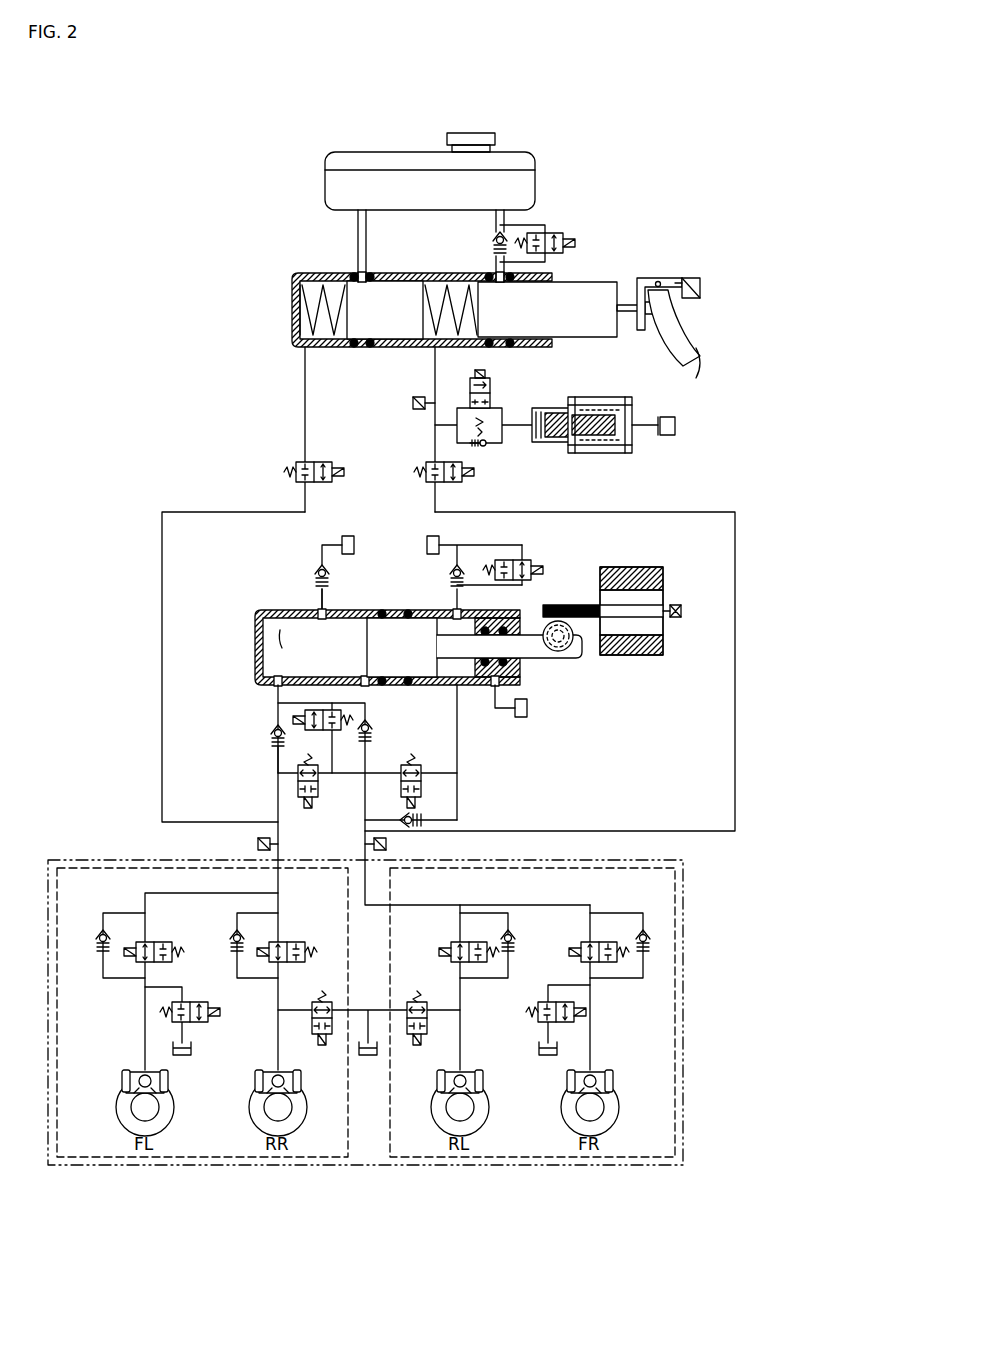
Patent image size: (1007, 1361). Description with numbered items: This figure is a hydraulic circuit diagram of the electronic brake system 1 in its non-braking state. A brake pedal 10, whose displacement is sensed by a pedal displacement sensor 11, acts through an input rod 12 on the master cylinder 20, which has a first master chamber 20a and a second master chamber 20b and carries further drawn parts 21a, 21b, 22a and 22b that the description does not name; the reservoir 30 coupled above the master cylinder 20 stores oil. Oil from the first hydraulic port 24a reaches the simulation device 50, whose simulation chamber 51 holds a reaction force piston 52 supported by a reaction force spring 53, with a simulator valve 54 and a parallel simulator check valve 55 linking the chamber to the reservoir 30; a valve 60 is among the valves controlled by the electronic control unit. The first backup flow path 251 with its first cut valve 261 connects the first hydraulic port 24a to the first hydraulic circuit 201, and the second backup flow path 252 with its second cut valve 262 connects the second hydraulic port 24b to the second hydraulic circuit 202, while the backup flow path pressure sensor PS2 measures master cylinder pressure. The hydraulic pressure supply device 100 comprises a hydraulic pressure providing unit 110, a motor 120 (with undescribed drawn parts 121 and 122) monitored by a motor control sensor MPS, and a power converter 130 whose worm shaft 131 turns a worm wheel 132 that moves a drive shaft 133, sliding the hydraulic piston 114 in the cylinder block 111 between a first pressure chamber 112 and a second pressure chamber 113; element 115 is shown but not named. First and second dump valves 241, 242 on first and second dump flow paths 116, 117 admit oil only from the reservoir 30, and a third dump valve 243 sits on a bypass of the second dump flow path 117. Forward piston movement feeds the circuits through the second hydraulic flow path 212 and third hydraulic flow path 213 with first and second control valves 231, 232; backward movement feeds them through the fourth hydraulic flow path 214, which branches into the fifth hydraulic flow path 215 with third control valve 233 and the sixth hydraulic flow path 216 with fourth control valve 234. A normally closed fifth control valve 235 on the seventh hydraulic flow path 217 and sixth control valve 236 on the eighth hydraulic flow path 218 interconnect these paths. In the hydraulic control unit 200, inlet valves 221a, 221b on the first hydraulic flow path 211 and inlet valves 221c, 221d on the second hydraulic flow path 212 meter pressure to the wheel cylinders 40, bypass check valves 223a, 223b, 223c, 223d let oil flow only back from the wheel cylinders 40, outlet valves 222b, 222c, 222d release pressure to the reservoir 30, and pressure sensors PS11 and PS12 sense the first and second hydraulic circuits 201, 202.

The electronic brake system 1 is at (309, 110).
The brake pedal 10 is at (684, 327).
The pedal displacement sensor 11 is at (700, 284).
The input rod 12 is at (631, 305).
The master cylinder 20 is at (292, 291).
The first master chamber 20a is at (453, 285).
The second master chamber 20b is at (326, 277).
The first piston 21a is at (590, 291).
The second spring 21b is at (452, 330).
The second piston 22a is at (392, 297).
The first spring 22b is at (300, 312).
The first hydraulic port 24a is at (430, 347).
The second hydraulic port 24b is at (296, 348).
The reservoir 30 is at (352, 152).
The wheel cylinders 40 is at (166, 1080).
The simulation device 50 is at (629, 393).
The simulation chamber 51 is at (605, 397).
The reaction force piston 52 is at (562, 410).
The reaction force spring 53 is at (578, 415).
The simulator valve 54 is at (490, 385).
The simulator check valve 55 is at (486, 446).
The valve 60 is at (569, 233).
The hydraulic pressure supply device 100 is at (241, 572).
The hydraulic pressure providing unit 110 is at (251, 613).
The cylinder block 111 is at (257, 642).
The first pressure chamber 112 is at (268, 650).
The second pressure chamber 113 is at (492, 693).
The hydraulic piston 114 is at (419, 625).
The sealing member 115 is at (382, 610).
The first dump flow path 116 is at (320, 592).
The second dump flow path 117 is at (460, 587).
The motor 120 is at (655, 566).
The stator 121 is at (663, 649).
The rotor 122 is at (663, 629).
The power converter 130 is at (580, 604).
The worm shaft 131 is at (553, 605).
The worm wheel 132 is at (572, 648).
The drive shaft 133 is at (568, 660).
The motor control sensor MPS is at (676, 605).
The hydraulic control unit 200 is at (305, 1205).
The first hydraulic circuit 201 is at (456, 1162).
The second hydraulic circuit 202 is at (310, 1162).
The first hydraulic flow path 211 is at (277, 692).
The second hydraulic flow path 212 is at (368, 703).
The third hydraulic flow path 213 is at (278, 759).
The fourth hydraulic flow path 214 is at (459, 747).
The fifth hydraulic flow path 215 is at (459, 773).
The sixth hydraulic flow path 216 is at (459, 820).
The seventh hydraulic flow path 217 is at (350, 776).
The eighth hydraulic flow path 218 is at (332, 745).
The inlet valve 221a is at (600, 942).
The inlet valve 221b is at (470, 942).
The inlet valve 221c is at (298, 942).
The inlet valve 221d is at (165, 942).
The outlet valve 222b is at (417, 991).
The outlet valve 222c is at (322, 991).
The outlet valve 222d is at (206, 1023).
The check valve 223a is at (656, 940).
The check valve 223b is at (512, 952).
The check valve 223c is at (237, 952).
The check valve 223d is at (100, 928).
The first control valve 231 is at (370, 740).
The second control valve 232 is at (271, 735).
The third control valve 233 is at (412, 760).
The fourth control valve 234 is at (434, 800).
The fifth control valve 235 is at (303, 810).
The sixth control valve 236 is at (303, 720).
The first dump valve 241 is at (318, 568).
The second dump valve 242 is at (461, 568).
The third dump valve 243 is at (508, 560).
The first backup flow path 251 is at (435, 383).
The second backup flow path 252 is at (305, 385).
The first cut valve 261 is at (425, 470).
The second cut valve 262 is at (293, 470).
The backup flow path pressure sensor PS2 is at (413, 403).
The first hydraulic flow path pressure sensor PS11 is at (386, 845).
The second hydraulic flow path pressure sensor PS12 is at (258, 845).